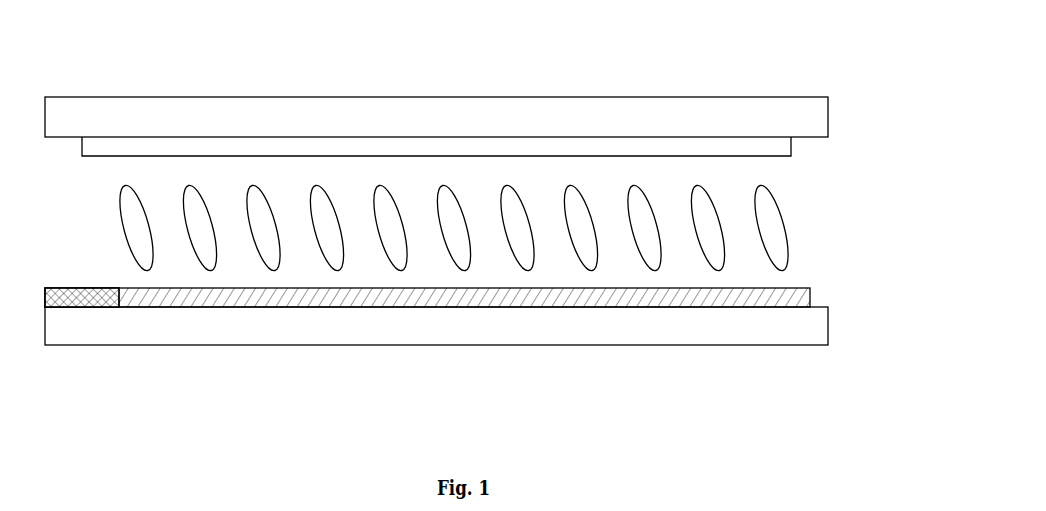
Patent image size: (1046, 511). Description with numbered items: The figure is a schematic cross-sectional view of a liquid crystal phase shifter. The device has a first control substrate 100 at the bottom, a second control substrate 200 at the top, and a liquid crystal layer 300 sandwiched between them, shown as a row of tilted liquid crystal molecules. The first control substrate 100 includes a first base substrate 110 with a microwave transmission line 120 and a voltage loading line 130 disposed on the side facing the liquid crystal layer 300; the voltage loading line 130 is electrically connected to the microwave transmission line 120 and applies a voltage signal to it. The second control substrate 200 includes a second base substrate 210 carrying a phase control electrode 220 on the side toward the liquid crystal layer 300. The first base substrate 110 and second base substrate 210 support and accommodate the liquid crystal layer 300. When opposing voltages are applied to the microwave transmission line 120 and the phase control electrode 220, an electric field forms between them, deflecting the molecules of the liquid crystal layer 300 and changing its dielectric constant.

The first control substrate 100 is at (503, 361).
The first base substrate 110 is at (503, 326).
The microwave transmission line 120 is at (319, 298).
The voltage loading line 130 is at (82, 297).
The second control substrate 200 is at (484, 93).
The second base substrate 210 is at (503, 117).
The phase control electrode 220 is at (636, 146).
The liquid crystal layer 300 is at (822, 232).